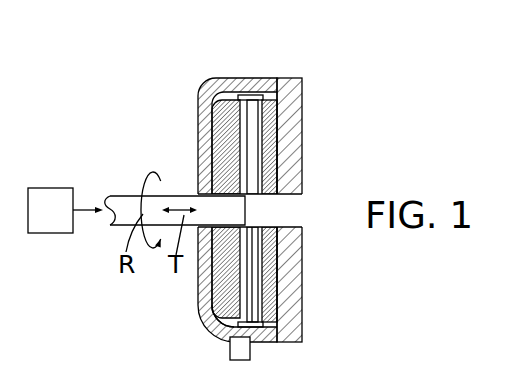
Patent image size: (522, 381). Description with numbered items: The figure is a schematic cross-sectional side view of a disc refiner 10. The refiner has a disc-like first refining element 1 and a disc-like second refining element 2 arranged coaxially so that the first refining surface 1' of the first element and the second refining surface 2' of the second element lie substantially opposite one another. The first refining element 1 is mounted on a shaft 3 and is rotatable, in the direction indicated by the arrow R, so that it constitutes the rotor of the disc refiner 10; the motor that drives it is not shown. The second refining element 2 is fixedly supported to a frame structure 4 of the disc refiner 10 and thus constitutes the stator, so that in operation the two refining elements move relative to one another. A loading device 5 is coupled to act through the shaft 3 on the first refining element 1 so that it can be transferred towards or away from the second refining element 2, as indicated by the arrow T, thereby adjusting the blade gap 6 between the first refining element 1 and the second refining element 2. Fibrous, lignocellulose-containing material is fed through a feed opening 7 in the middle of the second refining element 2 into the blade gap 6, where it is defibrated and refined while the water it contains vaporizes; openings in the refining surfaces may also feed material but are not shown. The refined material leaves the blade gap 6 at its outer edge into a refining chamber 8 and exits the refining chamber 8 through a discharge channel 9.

The first refining element 1 is at (197, 197).
The first refining surface 1' is at (300, 211).
The second refining element 2 is at (281, 182).
The second refining surface 2' is at (215, 144).
The shaft 3 is at (131, 196).
The frame structure 4 is at (217, 70).
The loading device 5 is at (52, 188).
The blade gap 6 is at (252, 294).
The feed opening 7 is at (291, 212).
The refining chamber 8 is at (212, 312).
The discharge channel 9 is at (233, 348).
The disc refiner 10 is at (125, 88).